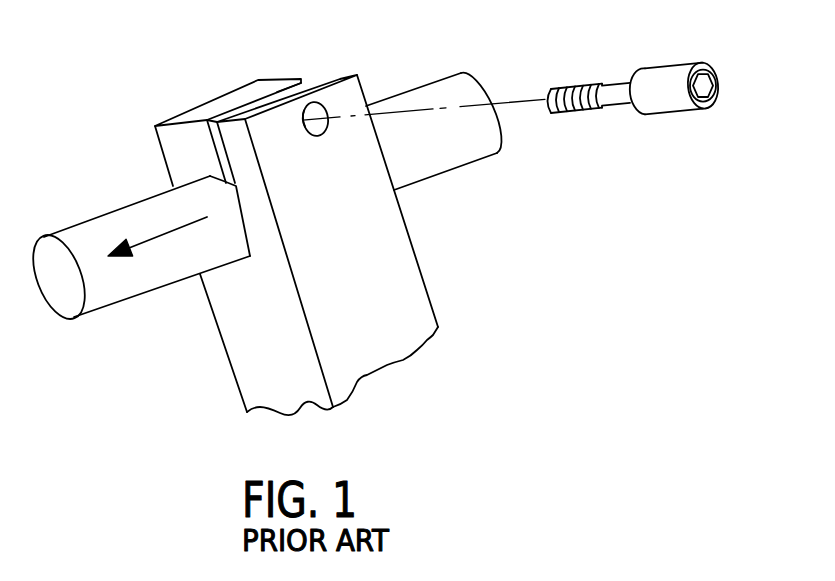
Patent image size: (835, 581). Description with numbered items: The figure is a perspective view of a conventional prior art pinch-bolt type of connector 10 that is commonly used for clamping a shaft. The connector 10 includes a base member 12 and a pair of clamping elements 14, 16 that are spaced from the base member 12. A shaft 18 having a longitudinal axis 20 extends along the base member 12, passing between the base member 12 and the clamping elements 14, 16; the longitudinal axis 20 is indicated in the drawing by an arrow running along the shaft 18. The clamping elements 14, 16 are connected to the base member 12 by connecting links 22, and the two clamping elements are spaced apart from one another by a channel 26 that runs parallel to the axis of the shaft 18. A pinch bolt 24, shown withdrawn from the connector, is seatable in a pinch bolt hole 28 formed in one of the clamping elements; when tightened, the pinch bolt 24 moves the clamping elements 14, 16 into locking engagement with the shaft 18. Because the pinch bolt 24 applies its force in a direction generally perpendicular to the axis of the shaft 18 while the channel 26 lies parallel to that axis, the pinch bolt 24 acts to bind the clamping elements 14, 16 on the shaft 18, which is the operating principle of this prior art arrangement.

The connector 10 is at (380, 323).
The base member 12 is at (397, 243).
The clamping element 14 is at (331, 82).
The clamping element 16 is at (190, 115).
The shaft 18 is at (97, 221).
The longitudinal axis 20 is at (144, 230).
The connecting links 22 is at (300, 180).
The pinch bolt 24 is at (655, 71).
The channel 26 is at (273, 92).
The pinch bolt hole 28 is at (327, 108).